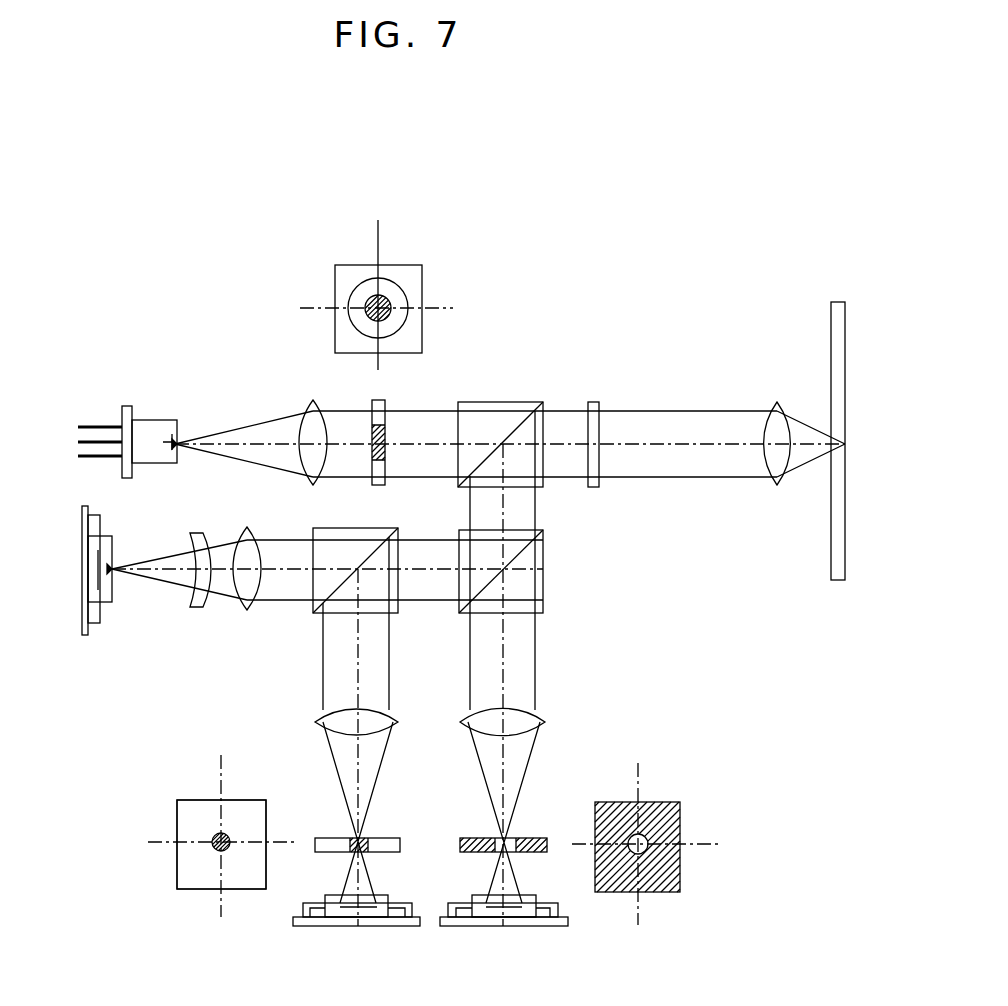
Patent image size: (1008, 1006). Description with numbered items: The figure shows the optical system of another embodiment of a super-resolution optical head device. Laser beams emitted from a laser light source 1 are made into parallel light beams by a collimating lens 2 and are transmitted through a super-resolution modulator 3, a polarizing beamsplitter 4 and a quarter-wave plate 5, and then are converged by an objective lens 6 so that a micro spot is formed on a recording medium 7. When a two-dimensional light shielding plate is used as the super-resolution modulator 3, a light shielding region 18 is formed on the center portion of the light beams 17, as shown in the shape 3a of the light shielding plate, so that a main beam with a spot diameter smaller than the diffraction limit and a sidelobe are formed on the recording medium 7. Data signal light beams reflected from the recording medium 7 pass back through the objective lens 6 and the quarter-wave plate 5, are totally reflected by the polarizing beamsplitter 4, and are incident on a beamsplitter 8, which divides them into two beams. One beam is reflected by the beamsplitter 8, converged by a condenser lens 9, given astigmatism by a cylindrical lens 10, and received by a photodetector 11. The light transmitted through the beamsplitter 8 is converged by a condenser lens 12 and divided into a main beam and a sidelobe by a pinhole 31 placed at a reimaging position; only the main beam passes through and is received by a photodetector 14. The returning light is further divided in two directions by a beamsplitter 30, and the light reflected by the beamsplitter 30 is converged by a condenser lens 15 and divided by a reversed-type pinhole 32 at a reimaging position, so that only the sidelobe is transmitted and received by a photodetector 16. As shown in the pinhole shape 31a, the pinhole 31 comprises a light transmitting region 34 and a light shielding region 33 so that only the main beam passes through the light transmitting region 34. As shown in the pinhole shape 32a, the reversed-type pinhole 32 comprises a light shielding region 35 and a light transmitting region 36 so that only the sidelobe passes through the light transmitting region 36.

The laser light source 1 is at (127, 407).
The collimating lens 2 is at (311, 402).
The super-resolution modulator 3 is at (373, 400).
The shape of the light shielding plate 3a is at (431, 262).
The polarizing beamsplitter 4 is at (508, 402).
The quarter-wave plate 5 is at (594, 402).
The objective lens 6 is at (776, 402).
The recording medium 7 is at (842, 396).
The beamsplitter 8 is at (543, 613).
The condenser lens (reconverging lens) 9 is at (247, 612).
The cylindrical lens 10 is at (197, 610).
The photodetector 11 is at (82, 540).
The condenser lens (reconverging lens) 12 is at (545, 718).
The photodetector 14 is at (510, 926).
The condenser lens (reconverging lens) 15 is at (315, 722).
The photodetector 16 is at (365, 926).
The light beams 17 is at (365, 300).
The light shielding region 18 is at (368, 297).
The beamsplitter 30 is at (398, 613).
The pinhole 31 is at (546, 840).
The pinhole shape 31a is at (693, 797).
The reversed-type pinhole 32 is at (399, 840).
The pinhole shape 32a is at (164, 803).
The light shielding region 33 is at (670, 888).
The light transmitting region 34 is at (637, 855).
The light shielding region 35 is at (228, 850).
The light transmitting region 36 is at (193, 886).